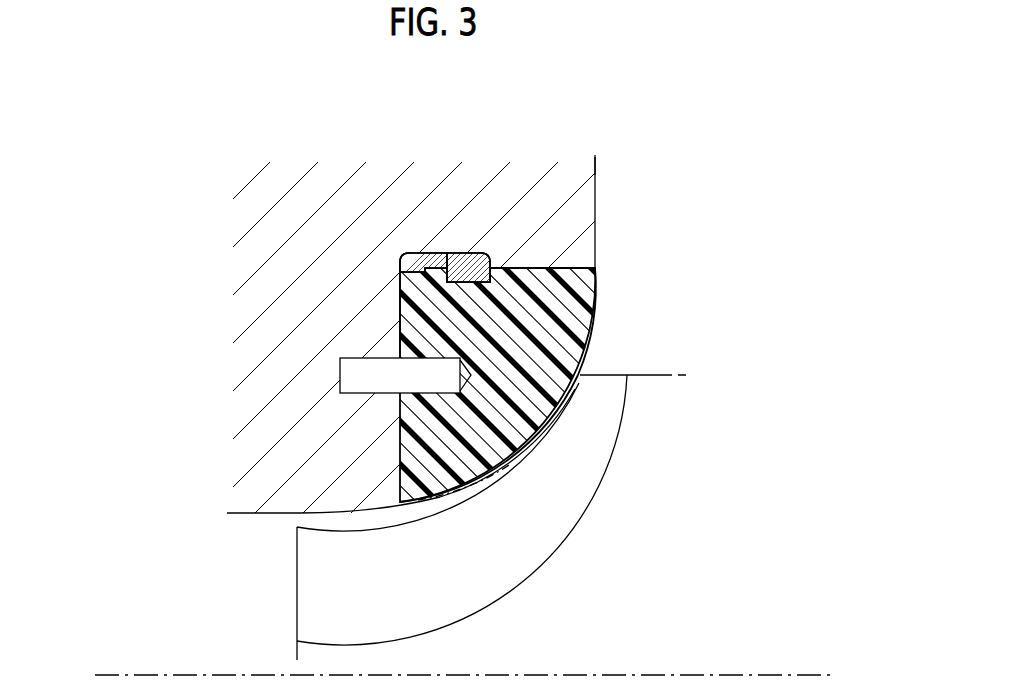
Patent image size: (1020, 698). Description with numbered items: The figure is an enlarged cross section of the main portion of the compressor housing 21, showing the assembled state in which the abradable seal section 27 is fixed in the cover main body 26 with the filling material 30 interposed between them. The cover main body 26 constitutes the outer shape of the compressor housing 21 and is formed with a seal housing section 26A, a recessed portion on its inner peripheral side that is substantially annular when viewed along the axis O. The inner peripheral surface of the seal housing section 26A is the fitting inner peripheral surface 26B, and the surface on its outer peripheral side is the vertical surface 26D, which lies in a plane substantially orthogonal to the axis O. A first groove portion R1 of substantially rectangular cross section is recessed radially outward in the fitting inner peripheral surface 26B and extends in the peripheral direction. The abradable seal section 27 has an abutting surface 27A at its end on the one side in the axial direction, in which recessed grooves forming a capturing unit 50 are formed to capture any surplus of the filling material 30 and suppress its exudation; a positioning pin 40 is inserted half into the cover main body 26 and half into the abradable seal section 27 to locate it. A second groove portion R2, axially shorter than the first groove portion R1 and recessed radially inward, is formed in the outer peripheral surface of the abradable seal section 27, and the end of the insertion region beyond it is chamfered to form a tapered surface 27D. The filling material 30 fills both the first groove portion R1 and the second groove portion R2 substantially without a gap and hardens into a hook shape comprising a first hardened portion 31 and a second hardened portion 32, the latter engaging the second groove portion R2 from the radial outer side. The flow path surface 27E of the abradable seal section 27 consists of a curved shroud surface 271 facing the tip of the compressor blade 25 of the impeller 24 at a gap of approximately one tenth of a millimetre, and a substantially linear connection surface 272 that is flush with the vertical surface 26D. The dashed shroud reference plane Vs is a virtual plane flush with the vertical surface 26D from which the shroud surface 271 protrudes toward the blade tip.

The compressor housing 21 is at (233, 219).
The cover main body 26 is at (382, 350).
The seal housing section 26A is at (624, 178).
The fitting inner peripheral surface 26B is at (530, 270).
The vertical surface 26D is at (597, 208).
The abradable seal section 27 is at (412, 333).
The abutting surface 27A is at (401, 305).
The tapered surface 27D is at (402, 266).
The flow path surface 27E is at (441, 330).
The shroud surface 271 is at (518, 466).
The connection surface 272 is at (585, 340).
The filling material 30 is at (324, 263).
The first hardened portion 31 is at (440, 263).
The second hardened portion 32 is at (468, 272).
The first groove portion R1 is at (413, 266).
The second groove portion R2 is at (480, 262).
The positioning pin 40 is at (343, 377).
The capturing unit 50 is at (324, 263).
The impeller 24 is at (653, 387).
The compressor blade 25 is at (312, 583).
The shroud reference plane Vs is at (492, 478).
The axis O is at (781, 672).